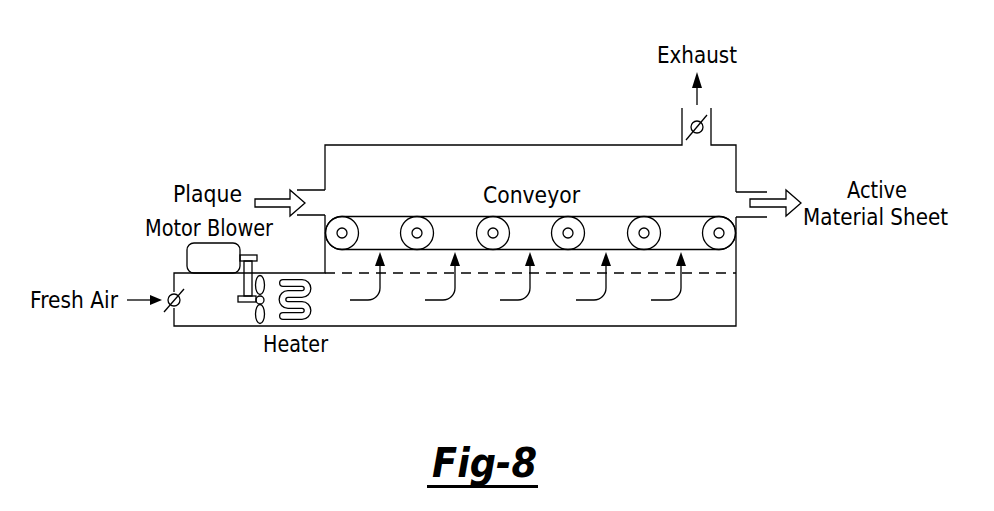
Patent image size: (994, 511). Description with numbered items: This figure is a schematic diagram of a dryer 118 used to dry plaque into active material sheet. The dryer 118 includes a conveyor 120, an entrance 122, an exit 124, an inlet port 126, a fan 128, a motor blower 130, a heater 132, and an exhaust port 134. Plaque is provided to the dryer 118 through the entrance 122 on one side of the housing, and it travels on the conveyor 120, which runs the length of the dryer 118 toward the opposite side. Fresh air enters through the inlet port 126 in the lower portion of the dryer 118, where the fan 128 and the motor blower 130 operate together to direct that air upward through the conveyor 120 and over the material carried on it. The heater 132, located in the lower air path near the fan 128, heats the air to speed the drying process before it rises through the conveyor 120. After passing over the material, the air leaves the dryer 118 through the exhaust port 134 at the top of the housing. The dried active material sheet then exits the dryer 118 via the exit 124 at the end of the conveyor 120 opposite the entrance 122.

The dryer 118 is at (273, 62).
The conveyor 120 is at (452, 216).
The entrance 122 is at (312, 190).
The exit 124 is at (750, 192).
The inlet port 126 is at (174, 318).
The fan 128 is at (255, 316).
The motor blower 130 is at (187, 262).
The heater 132 is at (311, 310).
The exhaust port 134 is at (682, 120).